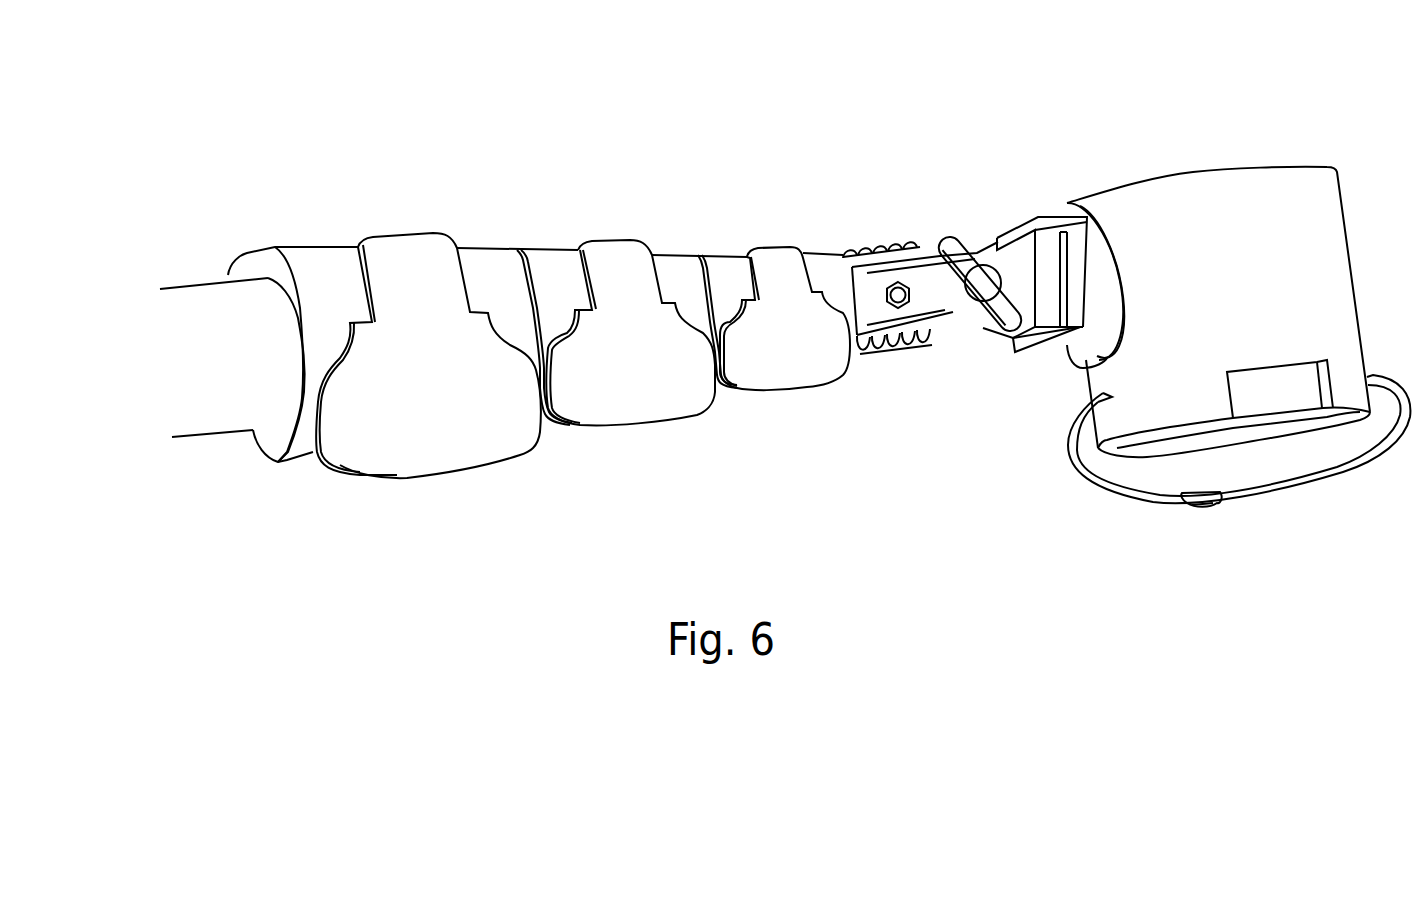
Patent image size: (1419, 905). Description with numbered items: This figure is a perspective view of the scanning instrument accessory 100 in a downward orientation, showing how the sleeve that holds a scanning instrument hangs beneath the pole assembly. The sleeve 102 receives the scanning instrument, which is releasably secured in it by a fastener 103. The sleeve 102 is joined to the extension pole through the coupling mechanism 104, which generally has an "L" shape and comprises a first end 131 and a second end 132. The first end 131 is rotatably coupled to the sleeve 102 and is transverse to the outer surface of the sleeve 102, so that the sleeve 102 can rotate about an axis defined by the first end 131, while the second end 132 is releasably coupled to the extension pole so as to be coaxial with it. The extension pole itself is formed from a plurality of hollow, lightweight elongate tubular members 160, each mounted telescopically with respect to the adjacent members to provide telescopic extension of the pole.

The scanning instrument accessory 100 is at (614, 128).
The elongate tubular members 160 is at (196, 310).
The second end 132 is at (878, 248).
The coupling mechanism 104 is at (959, 322).
The first end 131 is at (1045, 218).
The sleeve 102 is at (1213, 208).
The fastener 103 is at (1162, 502).